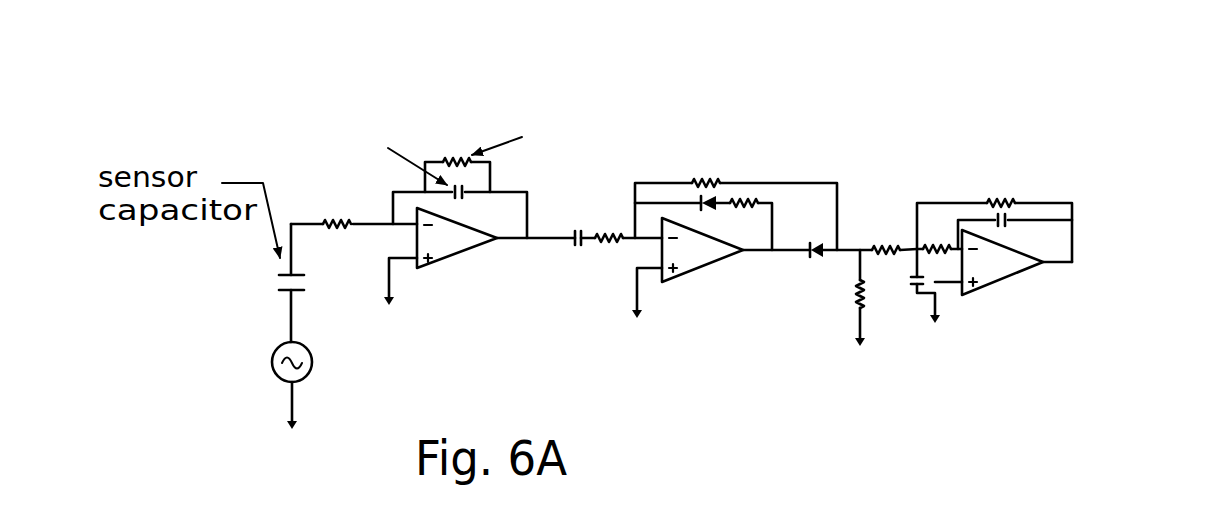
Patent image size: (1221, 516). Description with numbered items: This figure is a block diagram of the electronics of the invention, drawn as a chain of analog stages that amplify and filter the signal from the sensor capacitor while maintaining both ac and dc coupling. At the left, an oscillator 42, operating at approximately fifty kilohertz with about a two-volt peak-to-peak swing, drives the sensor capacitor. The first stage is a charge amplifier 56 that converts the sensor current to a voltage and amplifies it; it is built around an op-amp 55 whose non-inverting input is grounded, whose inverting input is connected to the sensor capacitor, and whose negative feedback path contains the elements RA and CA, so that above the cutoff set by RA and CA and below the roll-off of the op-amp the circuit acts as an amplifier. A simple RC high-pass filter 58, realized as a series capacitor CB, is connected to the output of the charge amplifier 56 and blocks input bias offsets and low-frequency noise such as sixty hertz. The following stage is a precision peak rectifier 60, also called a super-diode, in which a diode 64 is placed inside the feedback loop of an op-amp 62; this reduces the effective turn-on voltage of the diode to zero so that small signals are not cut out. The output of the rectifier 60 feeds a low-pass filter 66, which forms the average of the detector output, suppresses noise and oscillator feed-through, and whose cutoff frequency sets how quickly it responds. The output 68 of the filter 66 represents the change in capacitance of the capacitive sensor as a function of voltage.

The oscillator 42 is at (269, 385).
The op-amp 55 is at (457, 253).
The charge amplifier 56 is at (475, 124).
The RC high-pass filter 58 is at (579, 243).
The precision peak rectifier 60 is at (746, 139).
The op-amp 62 is at (702, 261).
The diode 64 is at (695, 190).
The low-pass filter 66 is at (1002, 164).
The output 68 is at (1054, 262).